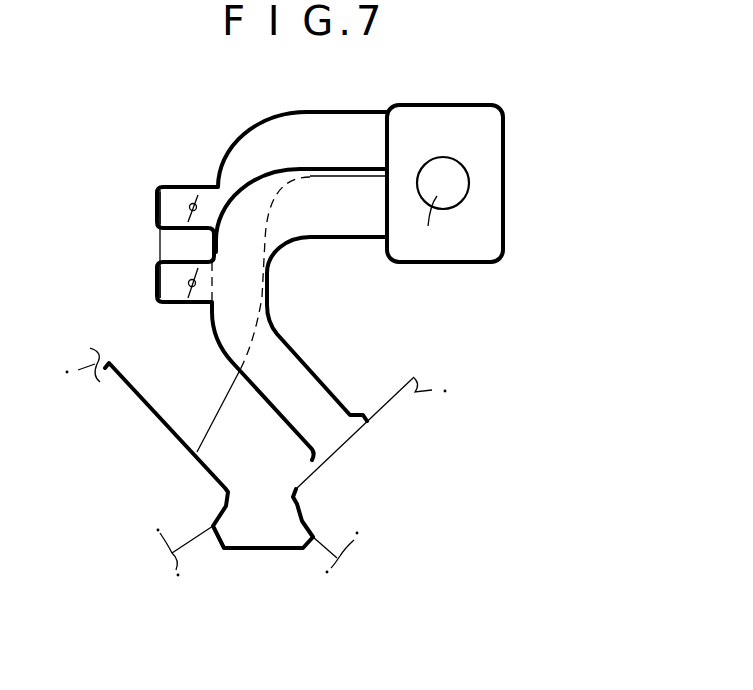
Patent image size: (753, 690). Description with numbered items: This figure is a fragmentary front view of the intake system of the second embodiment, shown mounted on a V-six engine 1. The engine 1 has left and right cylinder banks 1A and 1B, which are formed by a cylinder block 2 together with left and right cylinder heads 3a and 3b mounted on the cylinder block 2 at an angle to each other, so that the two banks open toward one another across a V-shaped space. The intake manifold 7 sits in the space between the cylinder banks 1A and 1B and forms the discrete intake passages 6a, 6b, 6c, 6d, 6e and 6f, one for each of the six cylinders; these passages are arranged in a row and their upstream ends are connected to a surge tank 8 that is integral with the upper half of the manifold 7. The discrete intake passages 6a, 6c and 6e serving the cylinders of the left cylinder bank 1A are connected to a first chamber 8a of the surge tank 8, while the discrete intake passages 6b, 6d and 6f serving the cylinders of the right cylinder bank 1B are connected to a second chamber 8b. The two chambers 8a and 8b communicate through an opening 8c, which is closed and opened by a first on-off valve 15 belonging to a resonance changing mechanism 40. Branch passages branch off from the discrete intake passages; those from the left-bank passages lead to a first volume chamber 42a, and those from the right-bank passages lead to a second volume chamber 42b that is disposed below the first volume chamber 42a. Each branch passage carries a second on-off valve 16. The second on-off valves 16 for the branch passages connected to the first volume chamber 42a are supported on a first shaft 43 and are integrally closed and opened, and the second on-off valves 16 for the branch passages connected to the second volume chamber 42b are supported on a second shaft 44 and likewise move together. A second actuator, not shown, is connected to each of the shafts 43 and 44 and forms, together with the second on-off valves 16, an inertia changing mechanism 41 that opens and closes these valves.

The V-6 engine 1 is at (118, 558).
The left cylinder bank 1A is at (120, 470).
The right cylinder bank 1B is at (410, 488).
The cylinder block 2 is at (264, 546).
The left cylinder head 3a is at (80, 358).
The right cylinder head 3b is at (418, 382).
The discrete intake passage 6a is at (254, 422).
The discrete intake passage 6b is at (346, 329).
The discrete intake passage 6c is at (254, 422).
The discrete intake passage 6d is at (346, 329).
The discrete intake passage 6e is at (200, 414).
The discrete intake passage 6f is at (302, 377).
The intake manifold 7 is at (314, 252).
The surge tank 8 is at (506, 241).
The first chamber 8a is at (491, 205).
The second chamber 8b is at (485, 127).
The opening 8c is at (466, 170).
The first on-off valve 15 is at (425, 223).
The second on-off valves 16 is at (198, 195).
The resonance changing mechanism 40 is at (568, 173).
The inertia changing mechanism 41 is at (136, 170).
The first volume chamber 42a is at (157, 202).
The second volume chamber 42b is at (157, 276).
The first shaft 43 is at (192, 204).
The second shaft 44 is at (190, 286).